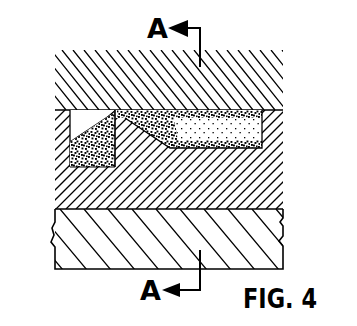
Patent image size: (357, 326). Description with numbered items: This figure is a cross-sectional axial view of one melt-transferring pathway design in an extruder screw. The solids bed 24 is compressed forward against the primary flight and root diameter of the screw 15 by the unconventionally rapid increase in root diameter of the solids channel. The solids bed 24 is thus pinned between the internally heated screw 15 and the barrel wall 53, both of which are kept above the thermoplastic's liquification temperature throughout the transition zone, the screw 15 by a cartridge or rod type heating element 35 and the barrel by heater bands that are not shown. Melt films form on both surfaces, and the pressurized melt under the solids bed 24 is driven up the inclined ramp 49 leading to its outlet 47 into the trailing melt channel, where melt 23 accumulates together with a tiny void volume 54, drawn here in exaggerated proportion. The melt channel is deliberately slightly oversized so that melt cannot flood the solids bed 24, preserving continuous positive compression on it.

The screw 15 is at (262, 181).
The melt 23 is at (82, 146).
The solids bed 24 is at (255, 137).
The cartridge or rod type heating element 35 is at (279, 242).
The outlet 47 is at (115, 110).
The inclined ramp 49 is at (176, 111).
The barrel wall 53 is at (272, 90).
The void volume 54 is at (76, 124).